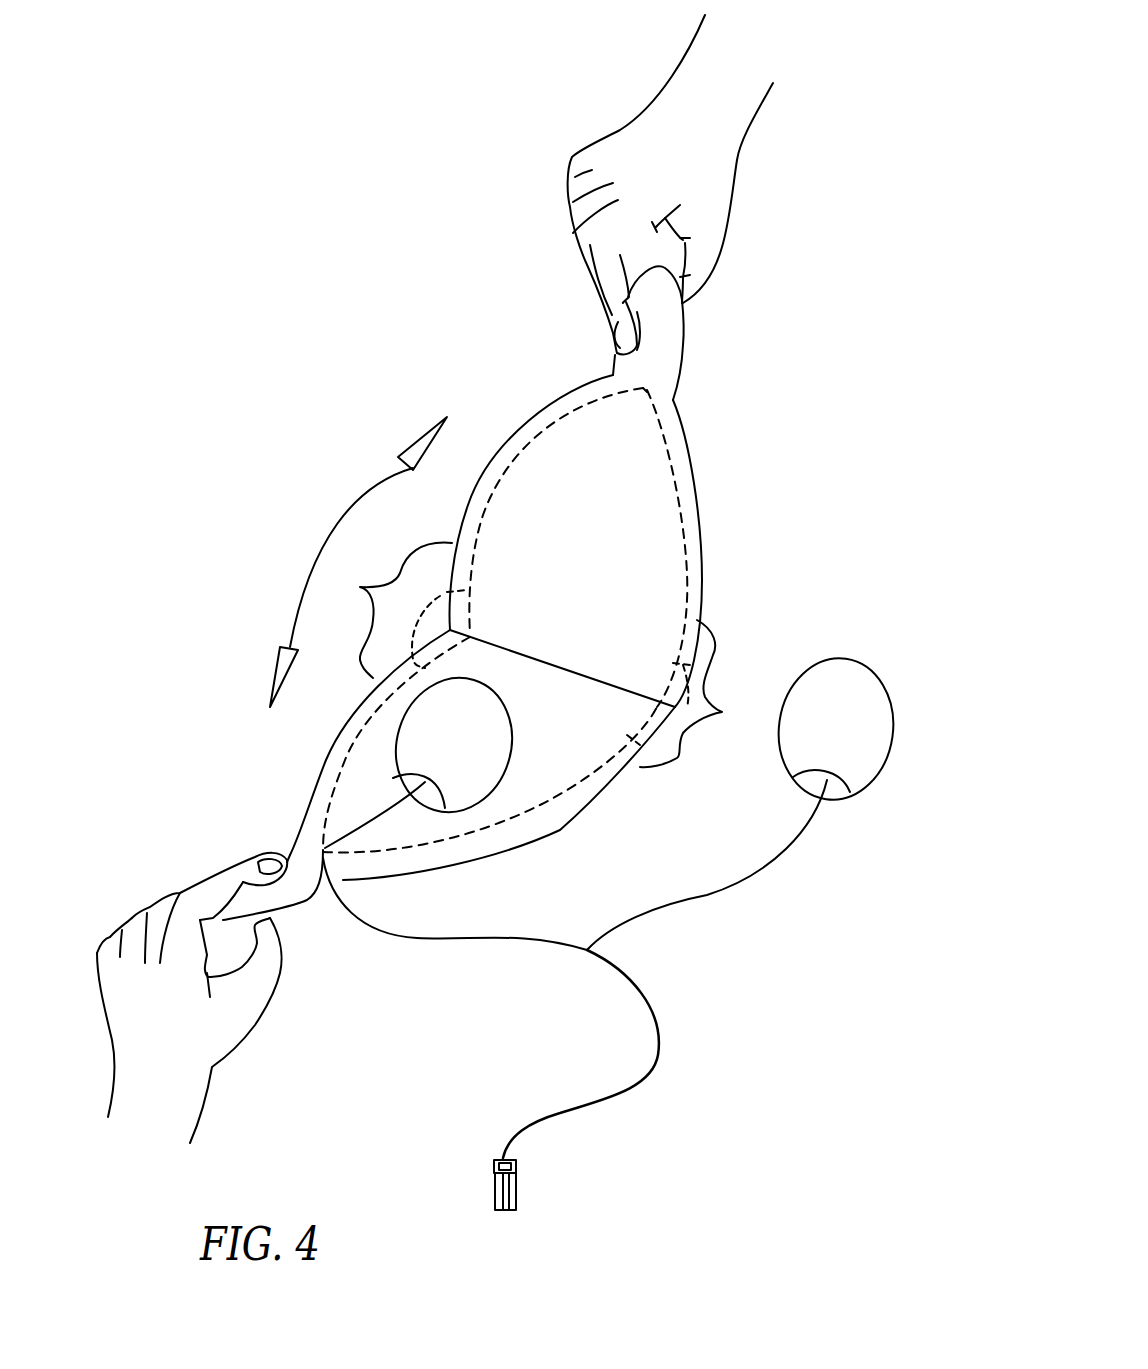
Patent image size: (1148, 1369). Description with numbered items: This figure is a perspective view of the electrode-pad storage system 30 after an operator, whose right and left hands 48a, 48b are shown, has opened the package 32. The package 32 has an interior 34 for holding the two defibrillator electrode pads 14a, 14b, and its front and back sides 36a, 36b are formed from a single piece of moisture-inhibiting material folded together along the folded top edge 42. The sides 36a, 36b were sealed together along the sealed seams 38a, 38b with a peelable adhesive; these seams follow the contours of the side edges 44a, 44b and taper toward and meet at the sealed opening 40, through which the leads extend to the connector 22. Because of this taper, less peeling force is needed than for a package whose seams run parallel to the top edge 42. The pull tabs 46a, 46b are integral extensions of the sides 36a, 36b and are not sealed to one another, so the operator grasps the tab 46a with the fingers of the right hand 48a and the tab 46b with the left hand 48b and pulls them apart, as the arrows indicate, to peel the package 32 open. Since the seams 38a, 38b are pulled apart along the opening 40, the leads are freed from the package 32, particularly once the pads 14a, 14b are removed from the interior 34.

The electrode-pad storage system 30 is at (313, 408).
The package 32 is at (707, 552).
The interior 34 is at (510, 777).
The front side 36a is at (663, 467).
The back side 36b is at (573, 767).
The sealed seam 38a is at (437, 598).
The sealed seam 38b is at (660, 733).
The sealed opening 40 is at (302, 840).
The folded top edge 42 is at (540, 643).
The side edge 44a is at (387, 610).
The side edge 44b is at (700, 693).
The pull tab 46a is at (610, 343).
The pull tab 46b is at (320, 907).
The right hand 48a is at (733, 213).
The left hand 48b is at (243, 1043).
The defibrillator electrode pad 14a is at (426, 755).
The defibrillator electrode pad 14b is at (858, 658).
The connector 22 is at (517, 1190).